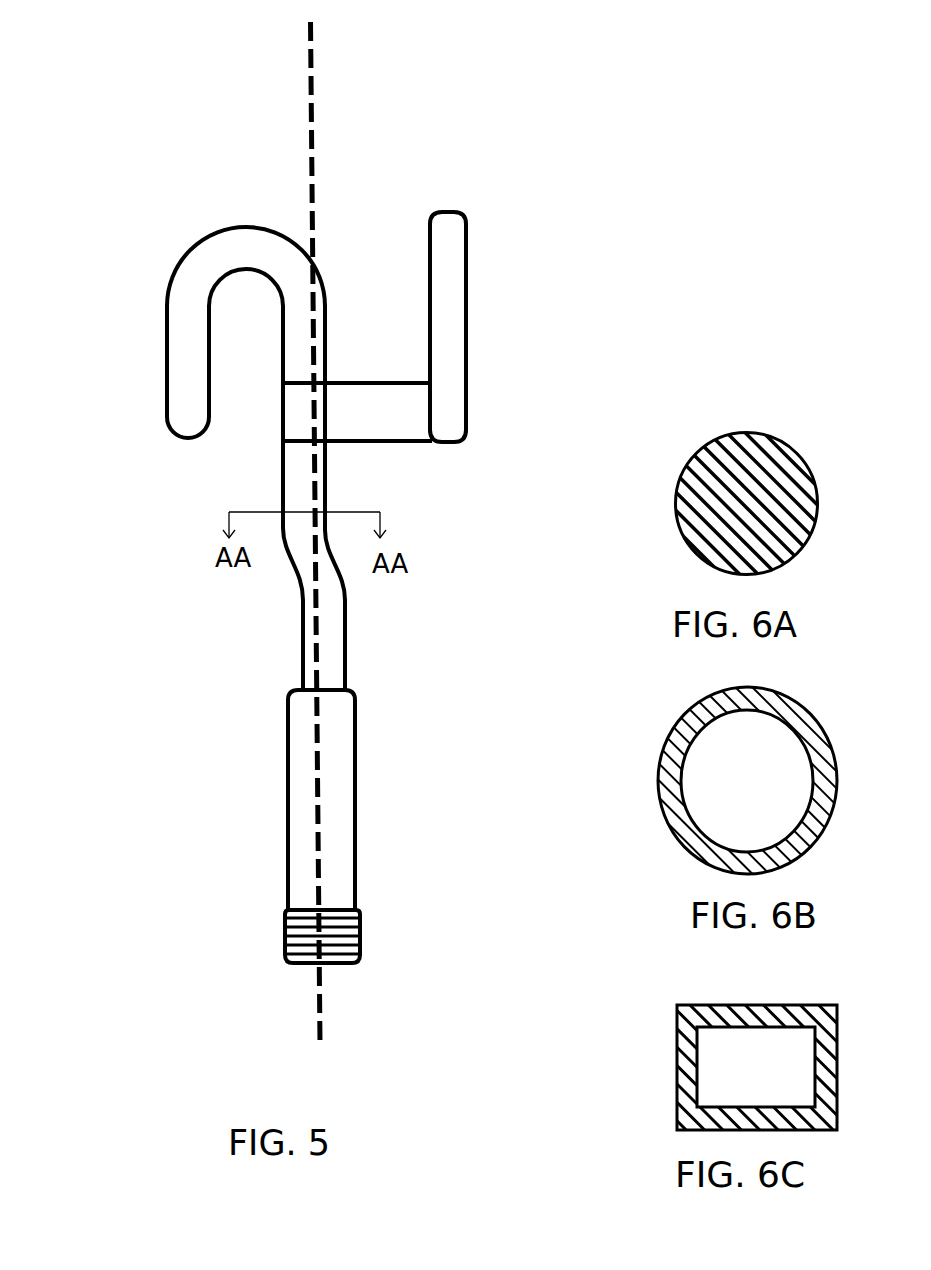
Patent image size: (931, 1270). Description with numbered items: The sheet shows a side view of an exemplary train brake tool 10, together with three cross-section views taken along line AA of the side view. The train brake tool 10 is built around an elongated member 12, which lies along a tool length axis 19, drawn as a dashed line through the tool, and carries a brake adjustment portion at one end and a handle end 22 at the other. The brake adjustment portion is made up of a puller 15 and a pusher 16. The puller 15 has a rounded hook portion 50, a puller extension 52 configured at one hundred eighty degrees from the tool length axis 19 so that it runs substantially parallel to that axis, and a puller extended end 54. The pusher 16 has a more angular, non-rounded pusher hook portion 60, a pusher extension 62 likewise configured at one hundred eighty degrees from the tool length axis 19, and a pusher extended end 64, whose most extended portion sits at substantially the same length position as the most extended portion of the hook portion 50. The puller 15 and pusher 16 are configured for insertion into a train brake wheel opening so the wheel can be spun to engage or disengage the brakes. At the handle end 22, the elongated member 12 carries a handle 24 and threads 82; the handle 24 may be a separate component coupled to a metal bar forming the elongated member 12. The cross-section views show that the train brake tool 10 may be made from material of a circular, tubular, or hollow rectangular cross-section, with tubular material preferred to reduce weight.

The train brake tool 10 is at (156, 206).
The elongated member 12 is at (303, 632).
The puller 15 is at (156, 278).
The pusher 16 is at (476, 300).
The longitudinal axis 19 is at (308, 78).
The handle end 22 is at (335, 965).
The handle 24 is at (323, 835).
The hook portion 50 is at (258, 250).
The puller extension 52 is at (172, 362).
The puller extended end 54 is at (183, 440).
The pusher hook portion 60 is at (415, 442).
The pusher extension 62 is at (452, 327).
The pusher extended end 64 is at (452, 210).
The threads 82 is at (285, 928).